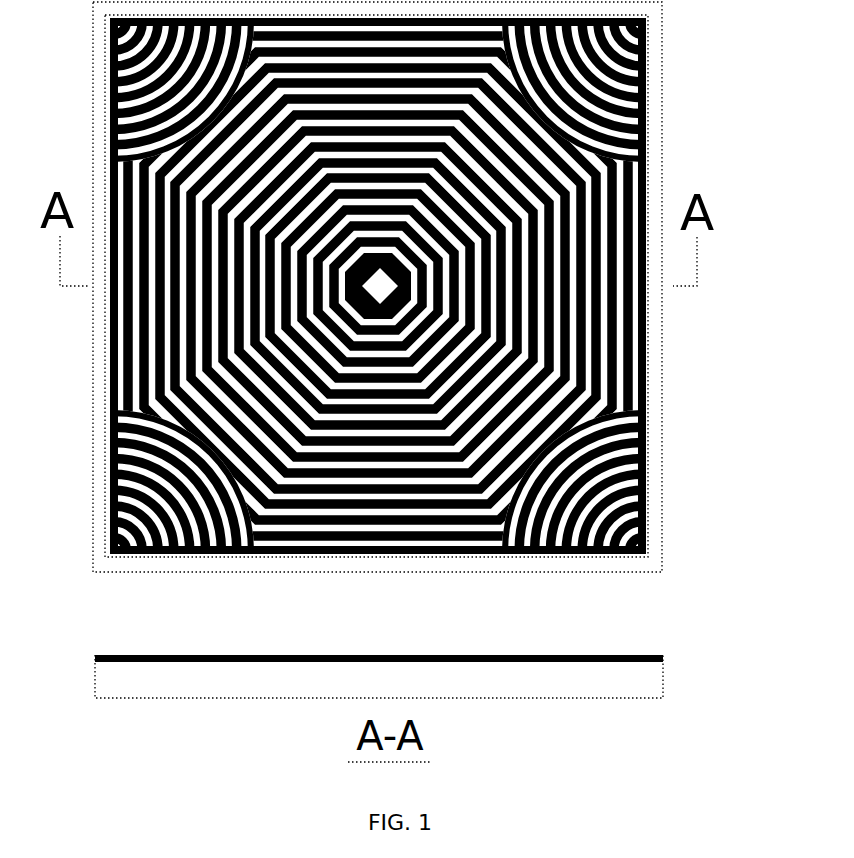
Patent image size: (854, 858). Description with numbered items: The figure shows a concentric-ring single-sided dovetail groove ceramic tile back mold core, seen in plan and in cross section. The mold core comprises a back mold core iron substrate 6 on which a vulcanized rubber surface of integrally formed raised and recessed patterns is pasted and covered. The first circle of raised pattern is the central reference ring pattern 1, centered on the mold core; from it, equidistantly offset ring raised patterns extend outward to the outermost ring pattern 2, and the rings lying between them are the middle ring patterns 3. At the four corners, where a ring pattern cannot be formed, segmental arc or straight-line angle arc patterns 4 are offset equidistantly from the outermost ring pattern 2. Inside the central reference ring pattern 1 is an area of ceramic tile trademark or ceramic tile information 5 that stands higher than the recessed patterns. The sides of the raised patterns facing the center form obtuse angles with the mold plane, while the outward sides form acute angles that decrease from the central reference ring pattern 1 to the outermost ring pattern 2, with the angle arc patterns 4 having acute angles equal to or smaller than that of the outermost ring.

The central reference ring pattern 1 is at (380, 288).
The outermost ring pattern 2 is at (623, 383).
The middle ring pattern 3 is at (422, 290).
The angle arc pattern 4 is at (592, 84).
The ceramic tile trademark or ceramic tile information 5 is at (398, 273).
The back mold core iron substrate 6 is at (628, 682).